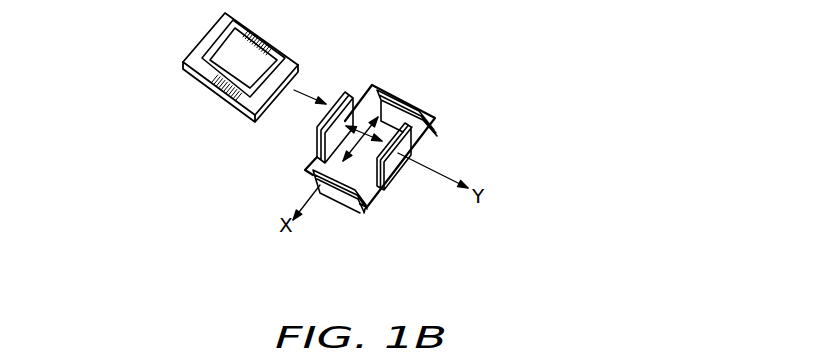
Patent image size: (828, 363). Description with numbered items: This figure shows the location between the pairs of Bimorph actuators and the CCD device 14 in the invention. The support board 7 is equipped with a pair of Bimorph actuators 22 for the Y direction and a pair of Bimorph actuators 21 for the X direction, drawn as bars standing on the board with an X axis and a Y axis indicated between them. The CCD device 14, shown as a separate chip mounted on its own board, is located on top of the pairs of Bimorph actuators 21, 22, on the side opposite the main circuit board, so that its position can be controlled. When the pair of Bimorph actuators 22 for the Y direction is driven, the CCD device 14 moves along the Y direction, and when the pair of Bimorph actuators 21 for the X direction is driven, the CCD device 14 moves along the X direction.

The CCD device 14 is at (230, 48).
The support board 7 is at (256, 116).
The pair of Bimorph actuators for the Y direction 22 is at (407, 120).
The pair of Bimorph actuators for the X direction 21 is at (411, 150).